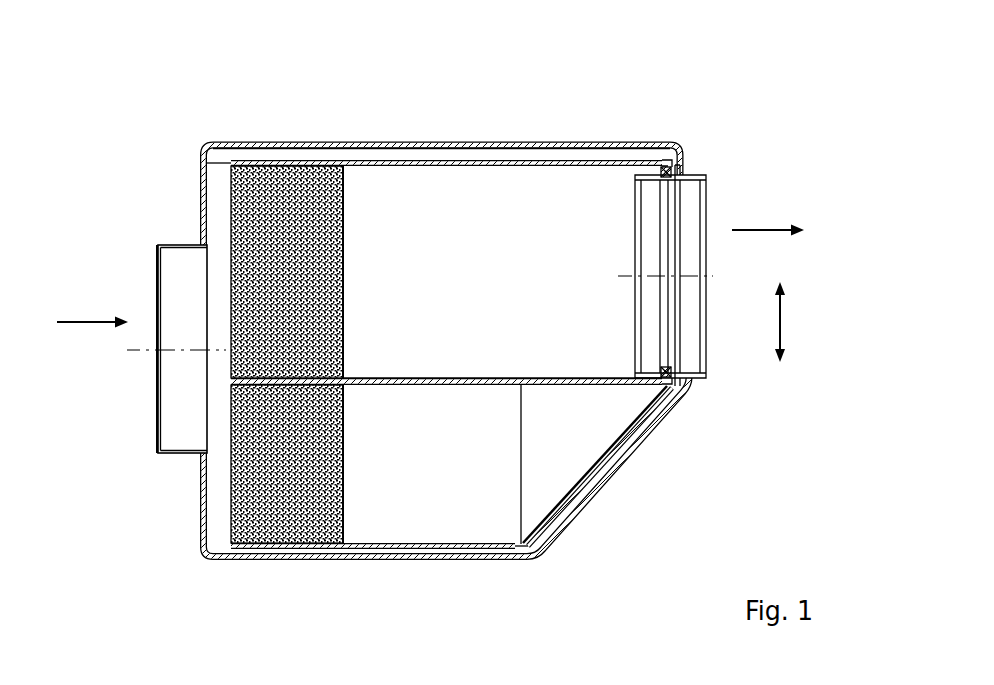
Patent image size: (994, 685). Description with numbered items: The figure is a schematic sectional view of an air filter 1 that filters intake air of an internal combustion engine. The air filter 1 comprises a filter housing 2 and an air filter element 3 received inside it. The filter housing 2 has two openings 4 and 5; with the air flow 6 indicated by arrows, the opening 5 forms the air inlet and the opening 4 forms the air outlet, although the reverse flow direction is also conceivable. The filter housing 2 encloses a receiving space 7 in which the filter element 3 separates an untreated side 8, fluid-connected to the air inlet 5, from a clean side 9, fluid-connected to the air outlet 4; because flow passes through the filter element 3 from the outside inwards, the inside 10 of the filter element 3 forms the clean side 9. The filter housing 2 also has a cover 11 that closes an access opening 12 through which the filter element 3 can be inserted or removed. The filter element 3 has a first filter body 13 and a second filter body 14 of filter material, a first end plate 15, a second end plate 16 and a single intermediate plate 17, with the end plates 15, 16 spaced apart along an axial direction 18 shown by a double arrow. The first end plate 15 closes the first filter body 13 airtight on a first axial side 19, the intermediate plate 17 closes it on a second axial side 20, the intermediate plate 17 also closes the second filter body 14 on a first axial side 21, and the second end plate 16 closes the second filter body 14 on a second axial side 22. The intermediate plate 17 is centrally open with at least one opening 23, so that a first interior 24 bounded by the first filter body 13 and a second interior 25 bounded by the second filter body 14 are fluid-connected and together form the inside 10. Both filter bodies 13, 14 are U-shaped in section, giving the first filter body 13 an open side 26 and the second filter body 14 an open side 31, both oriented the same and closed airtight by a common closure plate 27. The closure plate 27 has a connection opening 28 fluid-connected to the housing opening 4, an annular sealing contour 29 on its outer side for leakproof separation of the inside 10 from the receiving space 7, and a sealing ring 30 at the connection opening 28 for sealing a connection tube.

The air filter 1 is at (789, 178).
The filter housing 2 is at (356, 138).
The air filter element 3 is at (443, 147).
The opening (air outlet) 4 is at (707, 262).
The opening (air inlet) 5 is at (158, 393).
The air flow 6 is at (77, 321).
The receiving space 7 is at (218, 197).
The untreated side 8 is at (215, 425).
The clean side 9 is at (503, 289).
The inside of the filter element 10 is at (530, 289).
The cover 11 is at (560, 142).
The access opening 12 is at (395, 147).
The first filter body 13 is at (350, 238).
The second filter body 14 is at (350, 487).
The first end plate 15 is at (493, 150).
The second end plate 16 is at (380, 560).
The intermediate plate 17 is at (381, 370).
The axial direction 18 is at (781, 320).
The first axial side of the first filter body 19 is at (283, 168).
The second axial side of the first filter body 20 is at (481, 386).
The first axial side of the second filter body 21 is at (455, 379).
The second axial side of the second filter body 22 is at (303, 548).
The opening 23 is at (555, 379).
The first interior 24 is at (513, 225).
The second interior 25 is at (400, 442).
The open side of the first filter body 26 is at (692, 170).
The closure plate 27 is at (612, 439).
The connection opening 28 is at (637, 252).
The annular sealing contour 29 is at (689, 168).
The sealing ring 30 is at (666, 165).
The open side of the second filter body 31 is at (523, 463).